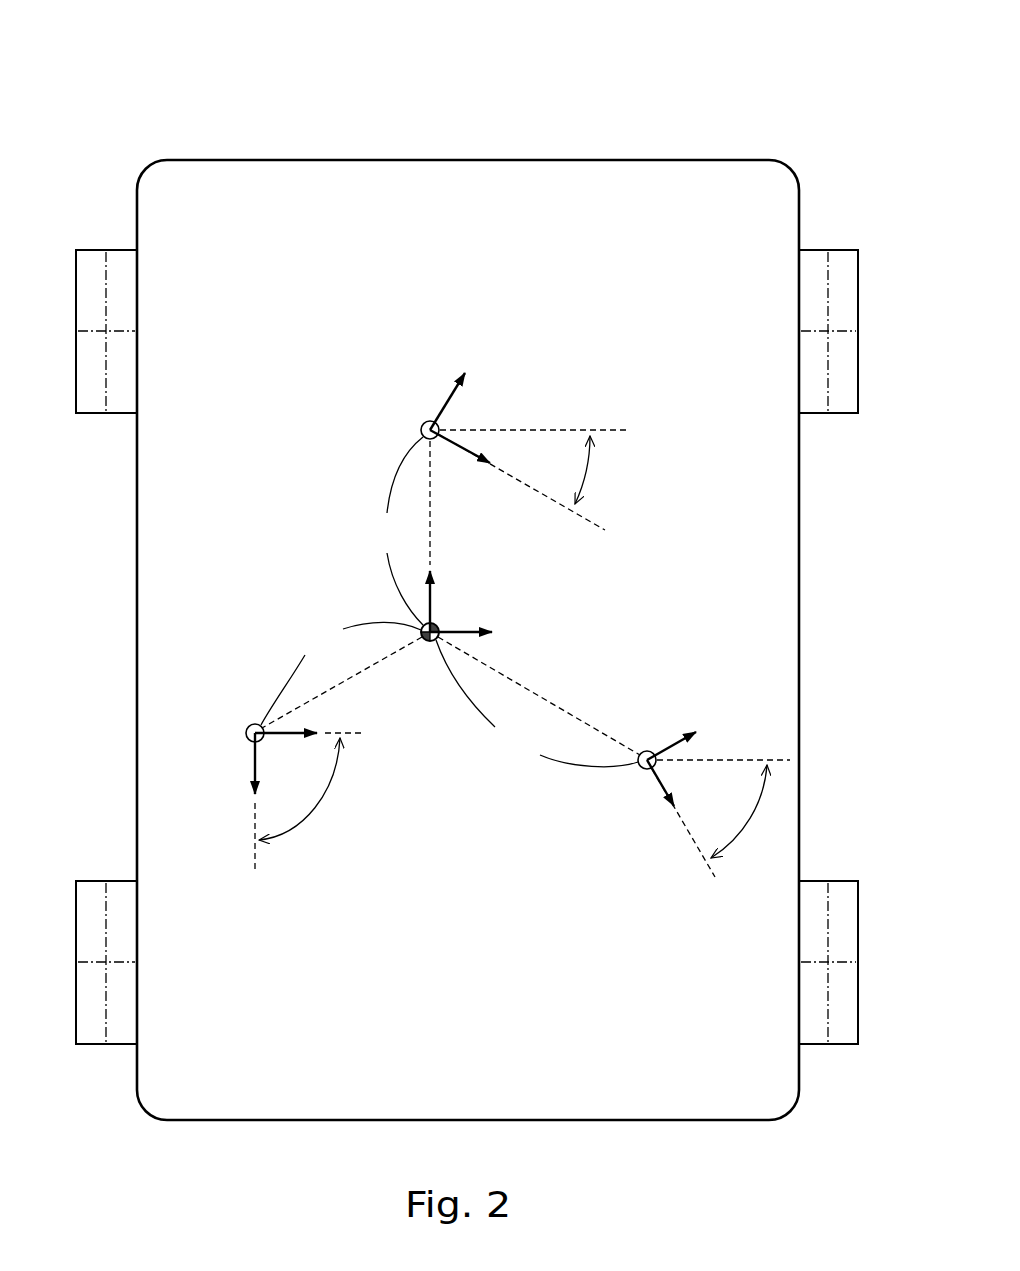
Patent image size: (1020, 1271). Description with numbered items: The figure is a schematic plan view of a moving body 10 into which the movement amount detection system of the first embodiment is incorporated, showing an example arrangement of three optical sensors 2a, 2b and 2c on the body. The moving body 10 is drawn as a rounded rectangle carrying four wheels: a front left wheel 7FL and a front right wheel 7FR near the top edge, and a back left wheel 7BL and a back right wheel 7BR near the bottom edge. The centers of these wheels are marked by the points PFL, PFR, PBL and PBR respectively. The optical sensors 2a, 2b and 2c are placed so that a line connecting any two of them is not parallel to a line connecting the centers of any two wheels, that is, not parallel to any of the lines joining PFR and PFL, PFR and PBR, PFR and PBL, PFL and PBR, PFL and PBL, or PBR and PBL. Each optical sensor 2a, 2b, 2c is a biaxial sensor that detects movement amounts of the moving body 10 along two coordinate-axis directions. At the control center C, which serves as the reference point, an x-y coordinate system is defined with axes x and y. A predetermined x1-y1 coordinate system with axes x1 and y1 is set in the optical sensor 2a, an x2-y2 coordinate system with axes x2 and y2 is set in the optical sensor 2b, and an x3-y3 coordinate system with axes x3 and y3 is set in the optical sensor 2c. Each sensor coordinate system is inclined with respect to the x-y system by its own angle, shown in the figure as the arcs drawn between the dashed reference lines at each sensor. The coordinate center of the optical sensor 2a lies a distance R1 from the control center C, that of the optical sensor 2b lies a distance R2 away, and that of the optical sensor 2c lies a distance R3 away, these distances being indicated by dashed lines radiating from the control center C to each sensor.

The moving body 10 is at (283, 117).
The front left wheel 7FL is at (101, 249).
The front right wheel 7FR is at (814, 249).
The back left wheel 7BL is at (97, 900).
The back right wheel 7BR is at (816, 900).
The center of wheel 7FL PFL is at (103, 333).
The center of wheel 7FR PFR is at (830, 333).
The center of wheel 7BL PBL is at (103, 964).
The center of wheel 7BR PBR is at (830, 964).
The optical sensor 2a is at (424, 424).
The optical sensor 2b is at (642, 768).
The optical sensor 2c is at (251, 725).
The control center C is at (428, 642).
The x axis x is at (470, 633).
The y axis y is at (441, 599).
The x1 axis x1 is at (477, 449).
The y1 axis y1 is at (465, 392).
The x2 axis x2 is at (681, 785).
The y2 axis y2 is at (689, 735).
The x3 axis x3 is at (271, 772).
The y3 axis y3 is at (286, 754).
The distance R1 is at (398, 531).
The distance R2 is at (538, 702).
The distance R3 is at (341, 673).